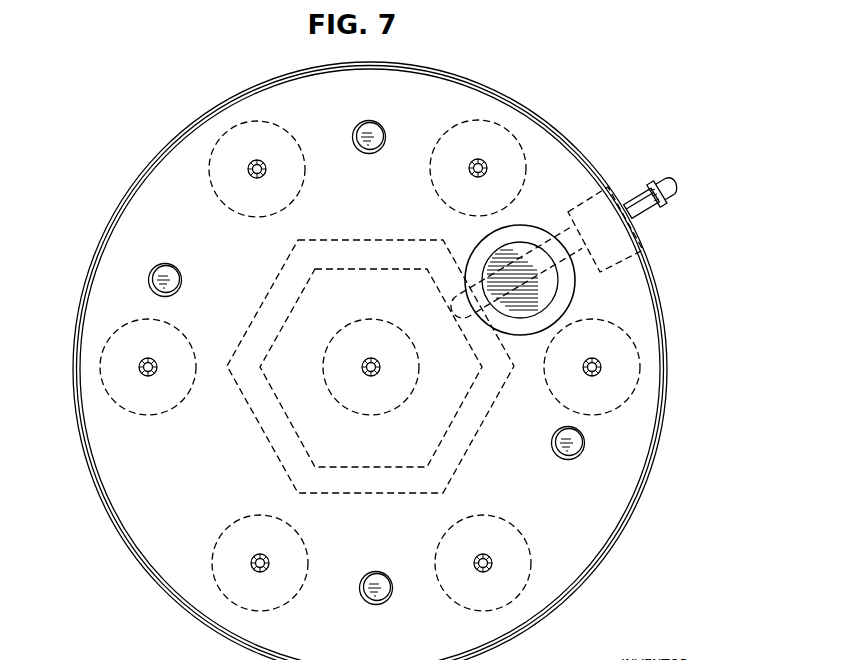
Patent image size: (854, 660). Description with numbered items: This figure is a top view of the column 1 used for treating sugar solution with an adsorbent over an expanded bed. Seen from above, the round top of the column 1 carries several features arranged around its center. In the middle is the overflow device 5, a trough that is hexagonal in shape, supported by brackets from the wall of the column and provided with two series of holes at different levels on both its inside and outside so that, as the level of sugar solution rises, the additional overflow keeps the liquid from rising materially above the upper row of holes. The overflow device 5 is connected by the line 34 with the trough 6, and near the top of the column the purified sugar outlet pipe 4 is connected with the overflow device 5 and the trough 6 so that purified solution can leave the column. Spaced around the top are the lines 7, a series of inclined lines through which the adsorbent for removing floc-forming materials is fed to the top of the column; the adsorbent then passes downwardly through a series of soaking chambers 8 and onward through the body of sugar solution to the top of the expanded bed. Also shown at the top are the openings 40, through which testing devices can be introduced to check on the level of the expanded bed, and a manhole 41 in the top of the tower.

The column 1 is at (112, 538).
The purified sugar outlet pipe 4 is at (632, 204).
The overflow device 5 is at (272, 287).
The trough 6 is at (638, 250).
The lines 7 is at (265, 167).
The soaking chambers 8 is at (293, 135).
The line 34 is at (568, 227).
The openings 40 is at (376, 129).
The manhole 41 is at (571, 280).